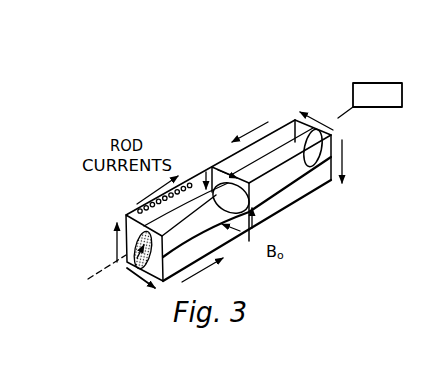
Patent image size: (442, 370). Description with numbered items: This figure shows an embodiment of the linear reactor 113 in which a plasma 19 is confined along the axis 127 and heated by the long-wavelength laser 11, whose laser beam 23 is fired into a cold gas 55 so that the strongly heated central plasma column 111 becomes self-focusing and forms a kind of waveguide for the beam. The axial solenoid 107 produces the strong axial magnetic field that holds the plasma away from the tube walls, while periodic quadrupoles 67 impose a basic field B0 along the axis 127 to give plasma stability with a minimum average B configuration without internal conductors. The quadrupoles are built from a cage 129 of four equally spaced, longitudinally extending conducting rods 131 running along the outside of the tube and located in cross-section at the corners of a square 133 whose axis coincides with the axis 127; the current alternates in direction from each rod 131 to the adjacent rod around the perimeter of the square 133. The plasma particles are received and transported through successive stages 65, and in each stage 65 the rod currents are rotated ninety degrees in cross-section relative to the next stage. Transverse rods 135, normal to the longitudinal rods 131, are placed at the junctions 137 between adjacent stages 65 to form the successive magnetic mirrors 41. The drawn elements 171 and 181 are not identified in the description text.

The laser 11 is at (396, 83).
The plasma 19 is at (134, 267).
The laser beam 23 is at (338, 117).
The magnetic mirrors 41 is at (243, 260).
The cold gas 55 is at (117, 211).
The quadrupole stages 65 is at (338, 190).
The periodic quadrupoles 67 is at (257, 252).
The axial solenoid 107 is at (126, 215).
The plasma column 111 is at (128, 288).
The linear reactor 113 is at (170, 293).
The axis 127 is at (103, 268).
The cage 129 is at (281, 100).
The conducting rods 131 is at (277, 217).
The square 133 is at (337, 134).
The transverse rods 135 is at (215, 163).
The junctions 137 is at (209, 163).
The terminal 171 is at (432, 133).
The terminal 181 is at (441, 232).